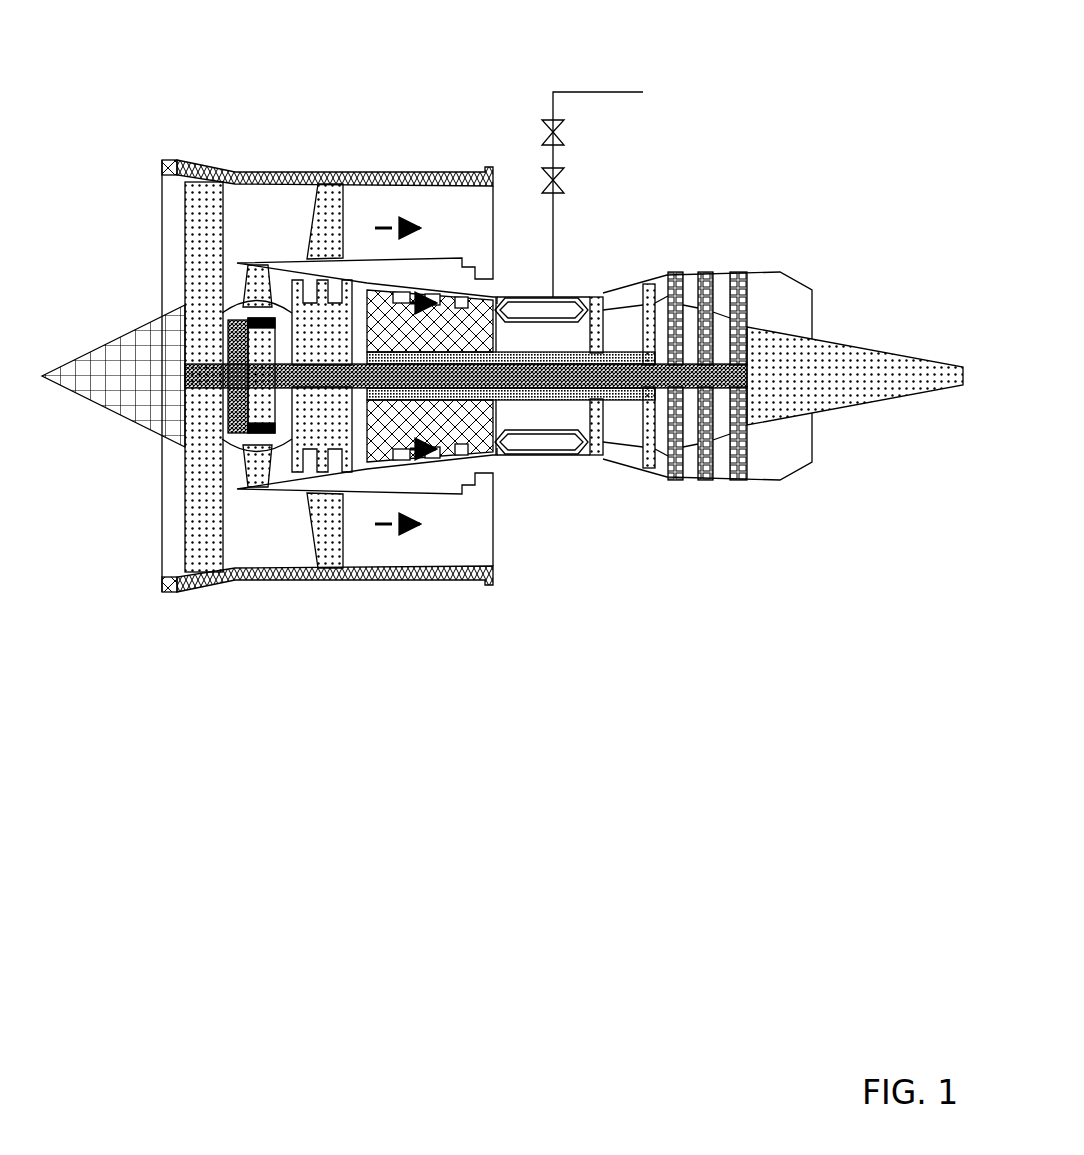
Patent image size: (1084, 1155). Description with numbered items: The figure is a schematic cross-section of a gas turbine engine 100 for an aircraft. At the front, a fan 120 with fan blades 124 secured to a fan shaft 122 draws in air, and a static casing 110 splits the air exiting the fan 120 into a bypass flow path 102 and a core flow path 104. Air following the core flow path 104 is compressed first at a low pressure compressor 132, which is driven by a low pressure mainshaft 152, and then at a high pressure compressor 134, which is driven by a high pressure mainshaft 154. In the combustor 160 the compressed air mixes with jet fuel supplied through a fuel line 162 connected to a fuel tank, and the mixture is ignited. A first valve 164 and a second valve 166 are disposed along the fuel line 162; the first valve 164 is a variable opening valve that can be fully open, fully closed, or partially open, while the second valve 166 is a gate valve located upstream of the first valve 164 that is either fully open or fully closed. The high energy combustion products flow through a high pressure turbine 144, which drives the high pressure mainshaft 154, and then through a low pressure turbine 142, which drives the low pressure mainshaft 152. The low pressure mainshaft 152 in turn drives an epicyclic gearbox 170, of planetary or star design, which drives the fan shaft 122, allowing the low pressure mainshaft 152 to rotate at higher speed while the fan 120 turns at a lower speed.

The gas turbine engine 100 is at (830, 135).
The bypass flow path 102 is at (398, 226).
The core flow path 104 is at (400, 293).
The static casing 110 is at (205, 171).
The fan 120 is at (185, 257).
The fan shaft 122 is at (183, 458).
The fan blades 124 is at (257, 376).
The low pressure compressor 132 is at (353, 460).
The high pressure compressor 134 is at (490, 290).
The low pressure turbine 142 is at (735, 483).
The high pressure turbine 144 is at (596, 297).
The low pressure mainshaft 152 is at (747, 378).
The high pressure mainshaft 154 is at (540, 352).
The combustor 160 is at (547, 455).
The fuel line 162 is at (593, 92).
The first valve 164 is at (555, 171).
The second valve 166 is at (548, 120).
The epicyclic gearbox 170 is at (233, 450).